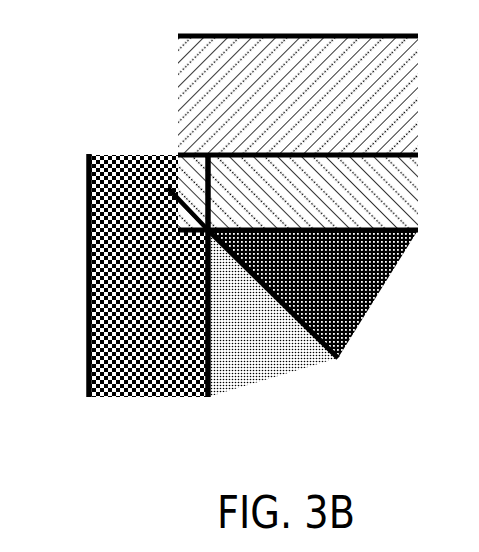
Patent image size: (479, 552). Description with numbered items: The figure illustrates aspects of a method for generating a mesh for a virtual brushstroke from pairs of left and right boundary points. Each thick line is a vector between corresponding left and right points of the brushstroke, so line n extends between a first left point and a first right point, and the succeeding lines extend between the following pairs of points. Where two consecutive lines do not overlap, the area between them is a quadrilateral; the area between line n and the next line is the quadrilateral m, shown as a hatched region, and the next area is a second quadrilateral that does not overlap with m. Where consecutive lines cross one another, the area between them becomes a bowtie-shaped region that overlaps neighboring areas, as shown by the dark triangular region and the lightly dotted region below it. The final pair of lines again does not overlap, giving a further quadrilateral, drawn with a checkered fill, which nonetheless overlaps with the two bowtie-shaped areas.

The quadrilateral m is at (305, 111).
The line n is at (308, 48).